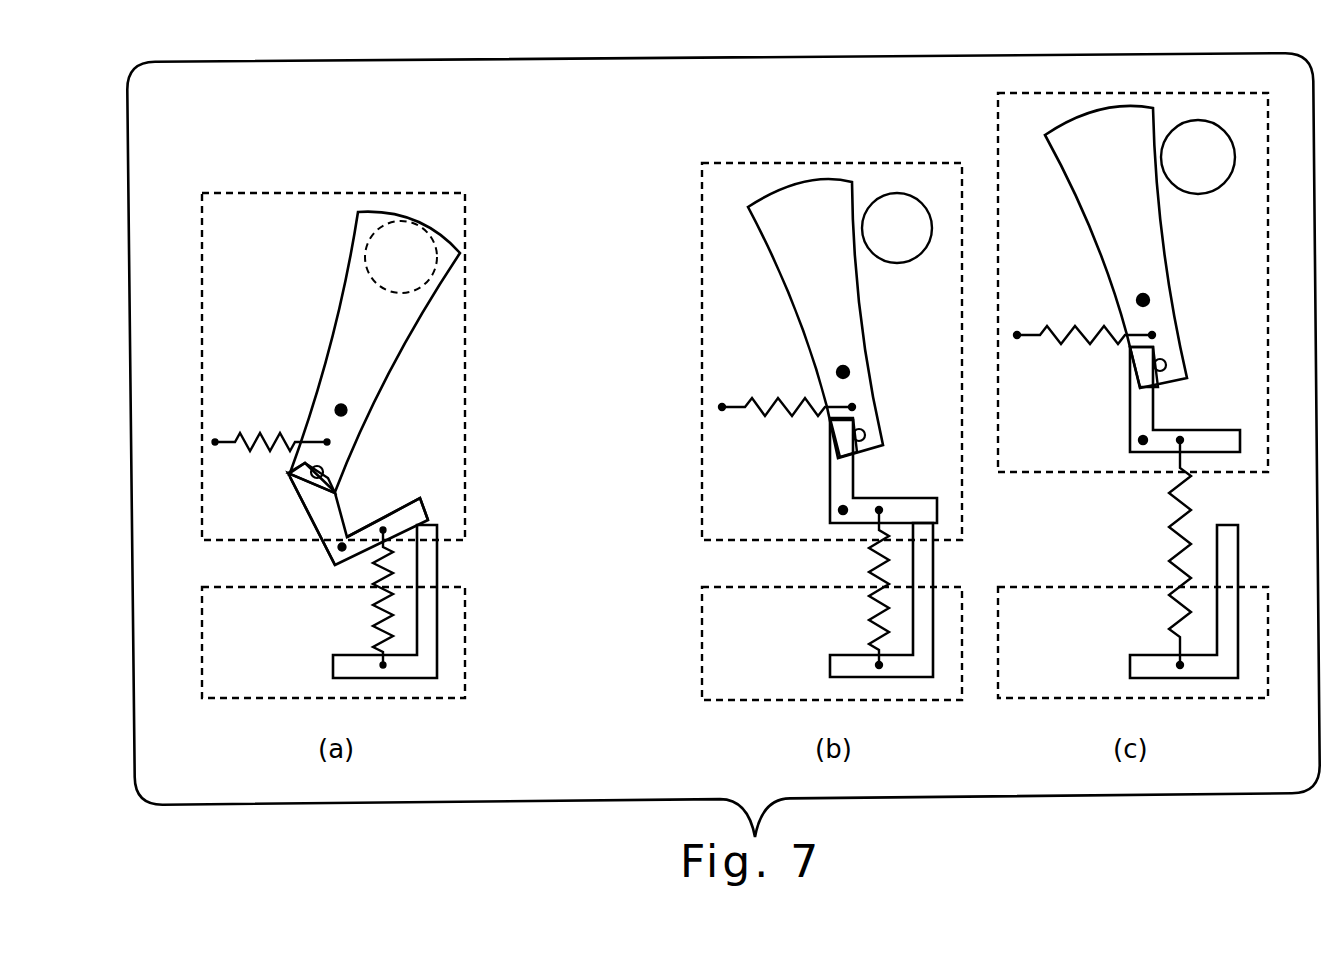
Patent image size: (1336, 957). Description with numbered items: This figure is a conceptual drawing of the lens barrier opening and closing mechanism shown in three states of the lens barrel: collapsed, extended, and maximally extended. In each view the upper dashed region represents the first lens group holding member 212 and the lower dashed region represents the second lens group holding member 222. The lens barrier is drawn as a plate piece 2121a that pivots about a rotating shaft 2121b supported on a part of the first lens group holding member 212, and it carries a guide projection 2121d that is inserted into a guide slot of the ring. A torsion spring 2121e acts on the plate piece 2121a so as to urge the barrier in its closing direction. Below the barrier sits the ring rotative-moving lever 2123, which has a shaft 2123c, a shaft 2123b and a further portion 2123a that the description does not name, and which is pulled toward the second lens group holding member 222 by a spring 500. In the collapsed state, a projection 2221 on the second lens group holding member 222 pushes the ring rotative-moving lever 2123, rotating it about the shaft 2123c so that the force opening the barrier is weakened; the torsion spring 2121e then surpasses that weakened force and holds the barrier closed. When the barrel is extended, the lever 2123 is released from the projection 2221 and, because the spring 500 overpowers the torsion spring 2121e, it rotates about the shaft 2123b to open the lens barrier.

The first lens group holding member 212 is at (467, 222).
The second lens group holding member 222 is at (467, 649).
The plate piece 2121a is at (415, 307).
The rotating shaft 2121b is at (347, 404).
The guide projection 2121d is at (324, 466).
The torsion spring 2121e is at (260, 427).
The ring rotative-moving lever 2123 is at (486, 490).
The arm portion of second lever 2123a is at (345, 490).
The shaft 2123c is at (362, 528).
The shaft 2123b is at (428, 510).
The spring 500 is at (380, 572).
The projection 2221 is at (443, 563).